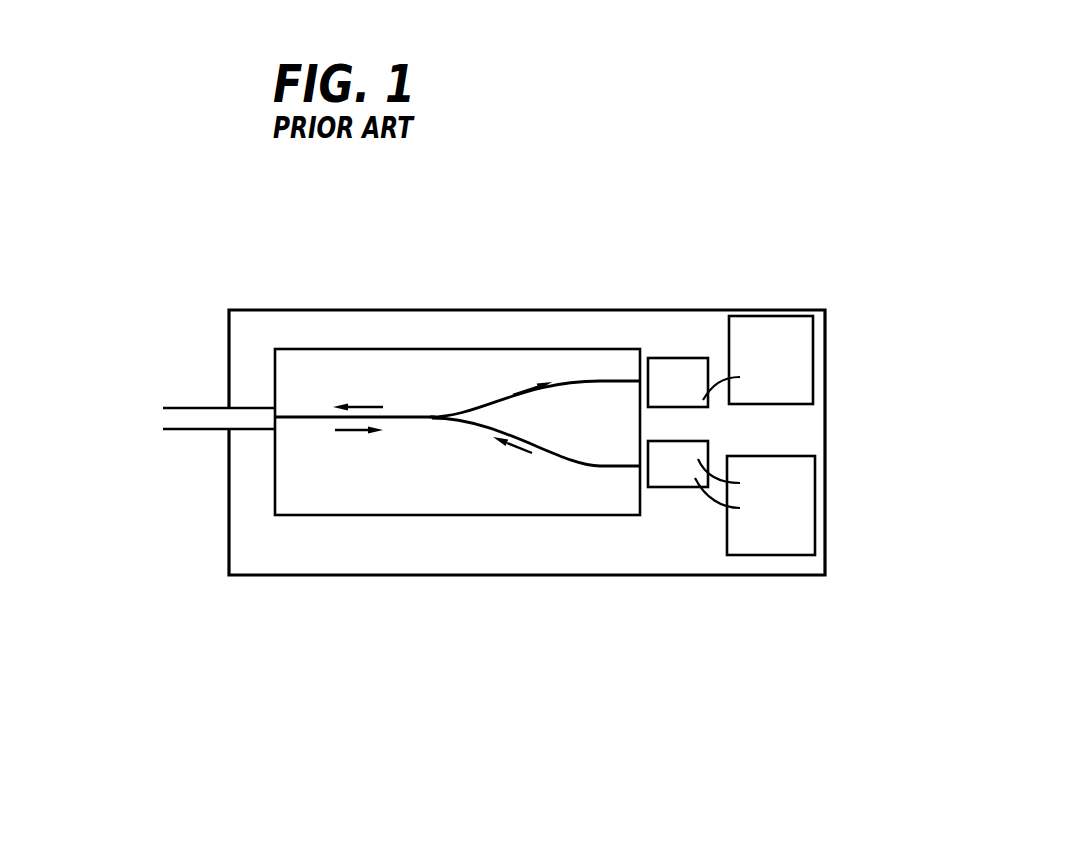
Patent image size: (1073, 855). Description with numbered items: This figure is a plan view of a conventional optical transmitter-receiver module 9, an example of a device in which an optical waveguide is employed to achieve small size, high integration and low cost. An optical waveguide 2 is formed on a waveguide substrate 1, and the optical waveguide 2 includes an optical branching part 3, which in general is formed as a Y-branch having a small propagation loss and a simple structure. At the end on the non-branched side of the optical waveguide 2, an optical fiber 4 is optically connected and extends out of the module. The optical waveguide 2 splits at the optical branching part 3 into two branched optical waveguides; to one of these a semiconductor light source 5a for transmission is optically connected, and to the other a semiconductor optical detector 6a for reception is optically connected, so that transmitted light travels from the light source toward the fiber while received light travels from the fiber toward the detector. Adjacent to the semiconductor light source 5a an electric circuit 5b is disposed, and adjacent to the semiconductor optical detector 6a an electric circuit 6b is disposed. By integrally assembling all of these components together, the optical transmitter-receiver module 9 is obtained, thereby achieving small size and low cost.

The waveguide substrate 1 is at (470, 515).
The optical waveguide 2 is at (327, 417).
The optical branching part 3 is at (448, 422).
The optical fiber 4 is at (205, 417).
The semiconductor light source 5a is at (675, 475).
The electric circuit 5b is at (788, 512).
The semiconductor optical detector 6a is at (693, 370).
The electric circuit 6b is at (788, 391).
The optical transmitter-receiver module 9 is at (626, 298).